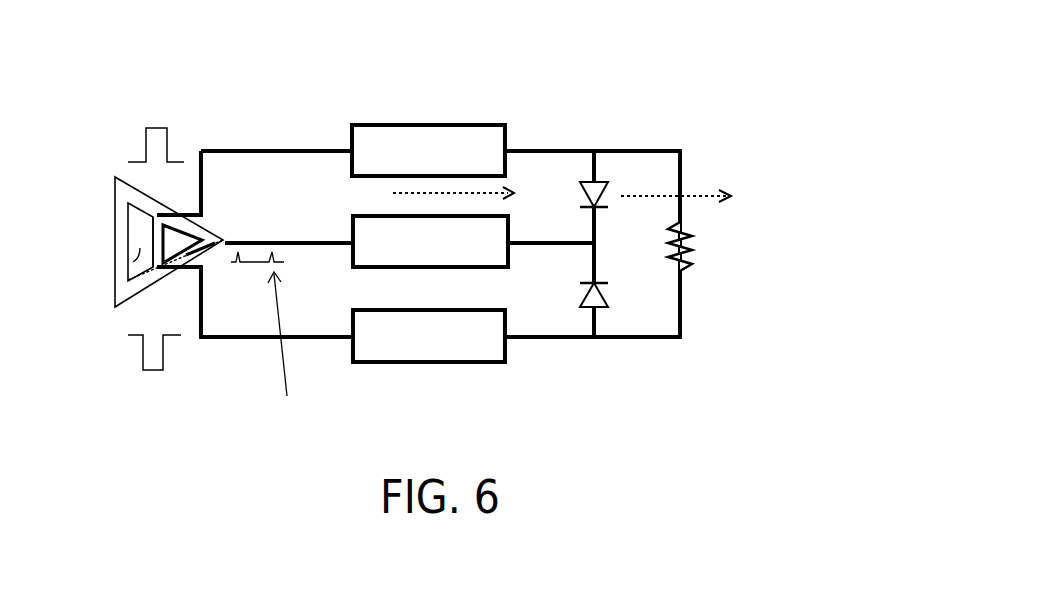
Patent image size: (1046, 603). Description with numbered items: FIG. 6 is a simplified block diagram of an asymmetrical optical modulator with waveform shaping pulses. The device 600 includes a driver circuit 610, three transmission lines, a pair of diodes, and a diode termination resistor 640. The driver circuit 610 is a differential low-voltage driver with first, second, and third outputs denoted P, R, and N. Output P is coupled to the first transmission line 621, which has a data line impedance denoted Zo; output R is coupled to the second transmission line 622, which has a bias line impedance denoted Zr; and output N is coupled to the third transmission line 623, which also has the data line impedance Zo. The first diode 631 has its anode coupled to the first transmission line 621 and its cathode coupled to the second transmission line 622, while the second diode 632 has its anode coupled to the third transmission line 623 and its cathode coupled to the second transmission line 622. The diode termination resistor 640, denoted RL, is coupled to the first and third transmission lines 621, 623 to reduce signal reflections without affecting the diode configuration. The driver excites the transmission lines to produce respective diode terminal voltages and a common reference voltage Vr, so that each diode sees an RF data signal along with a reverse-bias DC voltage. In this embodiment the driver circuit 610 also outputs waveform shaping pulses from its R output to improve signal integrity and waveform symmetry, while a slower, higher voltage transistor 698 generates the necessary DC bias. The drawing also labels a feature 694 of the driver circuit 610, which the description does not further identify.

The device 600 is at (119, 70).
The driver circuit 610 is at (113, 251).
The first transmission line 621 is at (382, 125).
The second transmission line 622 is at (353, 222).
The third transmission line 623 is at (372, 363).
The first diode 631 is at (600, 185).
The second diode 632 is at (598, 305).
The diode termination resistor 640 is at (690, 278).
The amplifier input stage 694 is at (150, 258).
The slower, higher voltage transistor 698 is at (200, 242).